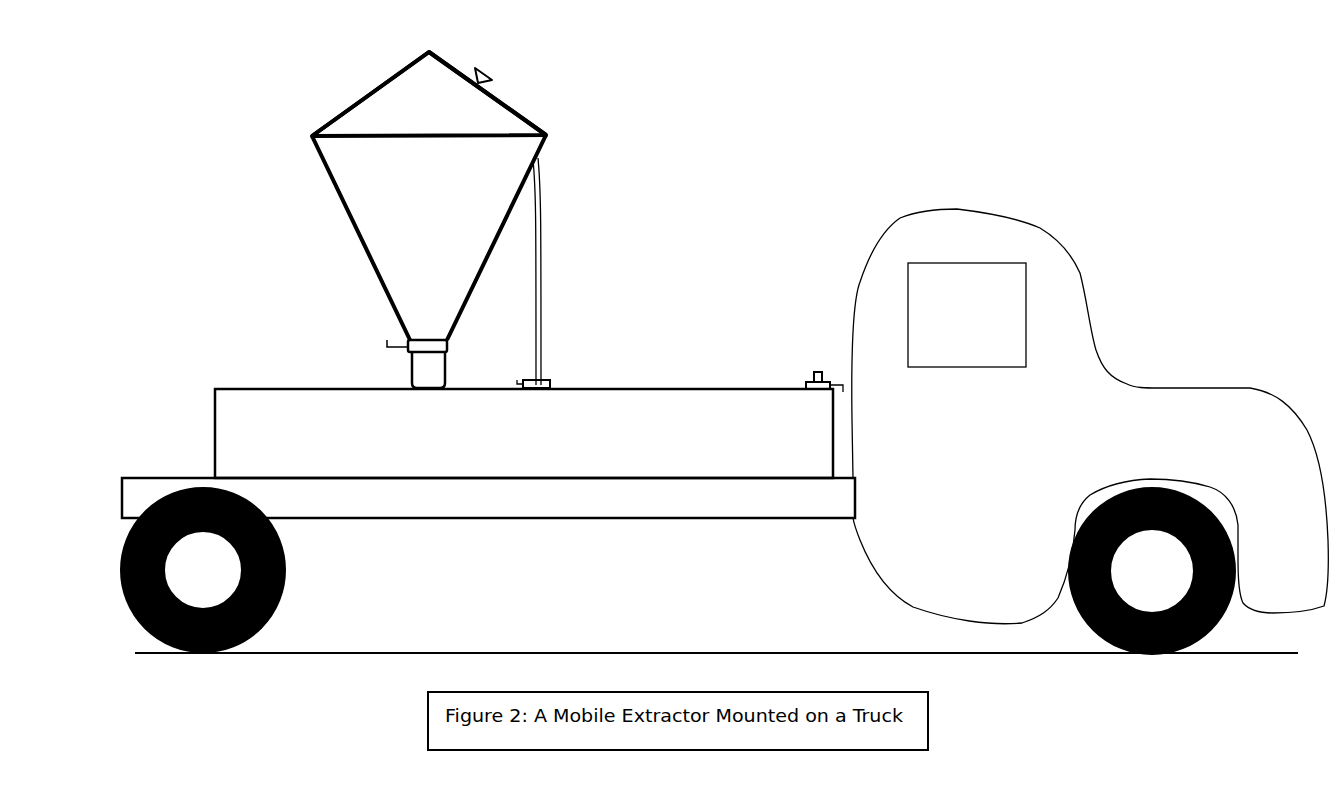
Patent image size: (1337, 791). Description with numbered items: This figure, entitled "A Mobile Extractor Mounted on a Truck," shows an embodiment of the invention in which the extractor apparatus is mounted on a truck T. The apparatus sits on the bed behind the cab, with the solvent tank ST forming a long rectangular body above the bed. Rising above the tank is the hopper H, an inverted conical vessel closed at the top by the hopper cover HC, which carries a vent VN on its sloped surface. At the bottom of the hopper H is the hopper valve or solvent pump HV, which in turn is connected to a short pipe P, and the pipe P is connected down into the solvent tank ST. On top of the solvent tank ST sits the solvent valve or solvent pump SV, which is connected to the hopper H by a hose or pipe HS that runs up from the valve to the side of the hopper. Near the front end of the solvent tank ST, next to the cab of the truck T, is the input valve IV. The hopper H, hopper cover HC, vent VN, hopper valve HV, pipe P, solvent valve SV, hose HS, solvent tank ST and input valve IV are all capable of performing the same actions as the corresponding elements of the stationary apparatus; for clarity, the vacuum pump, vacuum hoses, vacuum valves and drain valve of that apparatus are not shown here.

The truck T is at (992, 503).
The solvent tank ST is at (213, 411).
The hopper H is at (332, 177).
The hopper cover HC is at (352, 101).
The vent VN is at (492, 78).
The hopper valve or solvent pump HV is at (447, 347).
The pipe P is at (411, 373).
The hose or pipe HS is at (542, 297).
The solvent valve or solvent pump SV is at (543, 380).
The input valve IV is at (806, 380).